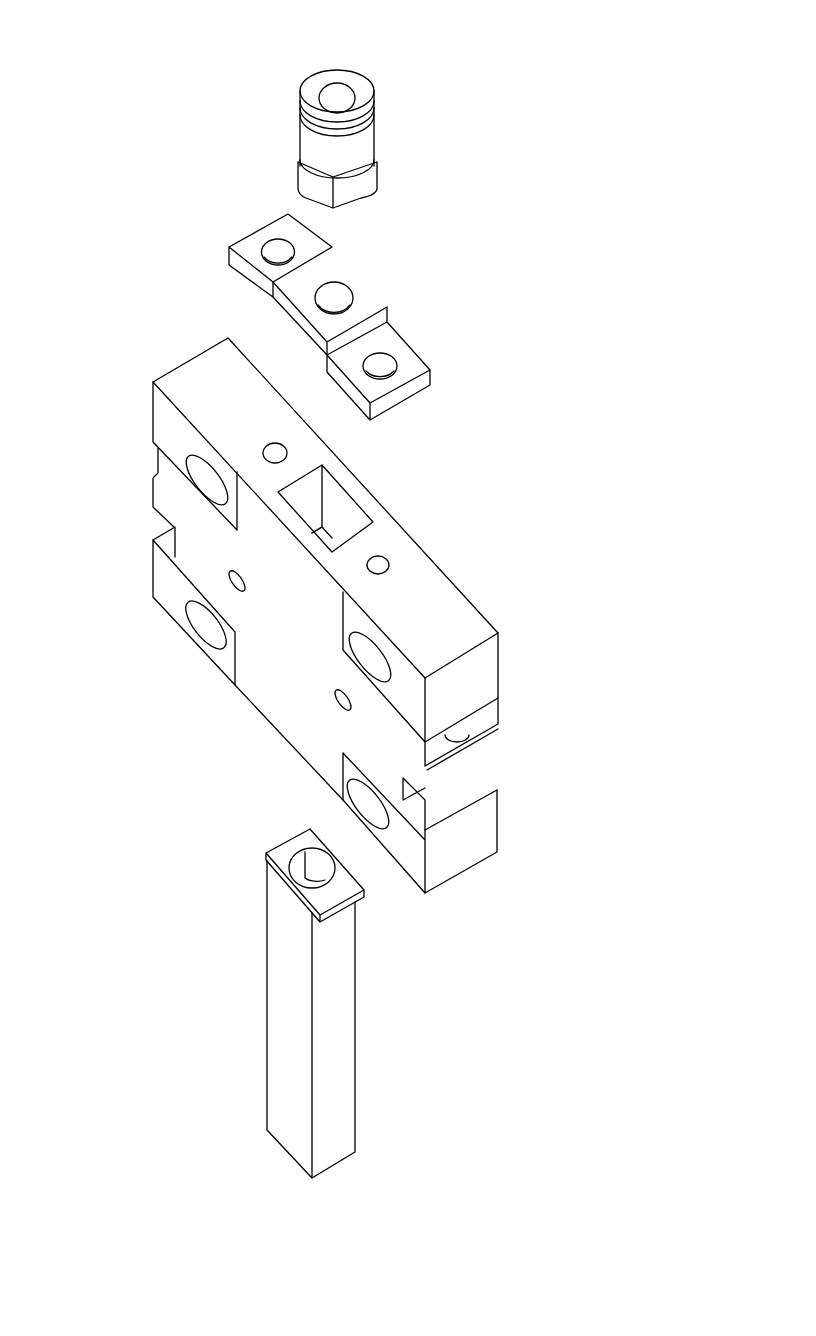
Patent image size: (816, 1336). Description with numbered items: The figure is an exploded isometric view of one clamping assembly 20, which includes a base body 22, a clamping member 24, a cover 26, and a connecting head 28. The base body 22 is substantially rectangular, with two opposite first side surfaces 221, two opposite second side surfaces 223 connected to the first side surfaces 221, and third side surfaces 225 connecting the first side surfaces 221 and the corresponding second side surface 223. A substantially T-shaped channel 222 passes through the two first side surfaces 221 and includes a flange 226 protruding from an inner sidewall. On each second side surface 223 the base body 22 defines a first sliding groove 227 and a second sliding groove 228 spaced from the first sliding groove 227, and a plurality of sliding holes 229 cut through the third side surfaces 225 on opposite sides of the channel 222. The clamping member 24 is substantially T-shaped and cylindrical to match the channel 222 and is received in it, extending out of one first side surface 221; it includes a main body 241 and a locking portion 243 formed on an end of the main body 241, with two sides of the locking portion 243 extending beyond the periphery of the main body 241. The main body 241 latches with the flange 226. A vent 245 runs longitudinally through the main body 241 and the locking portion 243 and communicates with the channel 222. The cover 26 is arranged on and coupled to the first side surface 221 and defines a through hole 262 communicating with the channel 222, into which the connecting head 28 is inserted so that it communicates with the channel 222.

The clamping assembly 20 is at (200, 58).
The base body 22 is at (337, 615).
The first side surface 221 is at (413, 587).
The channel 222 is at (310, 492).
The second side surface 223 is at (485, 668).
The third side surface 225 is at (302, 705).
The flange 226 is at (327, 520).
The first sliding groove 227 is at (487, 717).
The second sliding groove 228 is at (478, 787).
The sliding hole 229 is at (208, 625).
The clamping member 24 is at (314, 999).
The main body 241 is at (340, 1000).
The locking portion 243 is at (328, 885).
The vent 245 is at (318, 863).
The cover 26 is at (312, 304).
The through hole 262 is at (341, 297).
The connecting head 28 is at (362, 150).